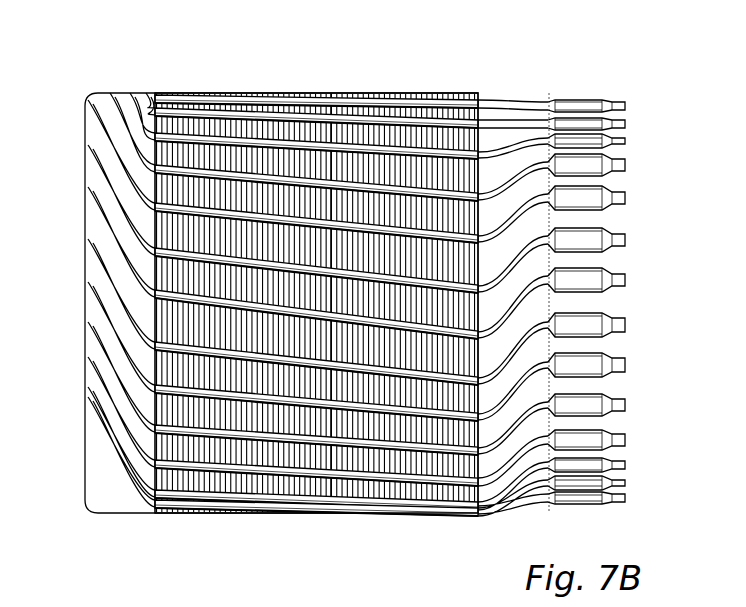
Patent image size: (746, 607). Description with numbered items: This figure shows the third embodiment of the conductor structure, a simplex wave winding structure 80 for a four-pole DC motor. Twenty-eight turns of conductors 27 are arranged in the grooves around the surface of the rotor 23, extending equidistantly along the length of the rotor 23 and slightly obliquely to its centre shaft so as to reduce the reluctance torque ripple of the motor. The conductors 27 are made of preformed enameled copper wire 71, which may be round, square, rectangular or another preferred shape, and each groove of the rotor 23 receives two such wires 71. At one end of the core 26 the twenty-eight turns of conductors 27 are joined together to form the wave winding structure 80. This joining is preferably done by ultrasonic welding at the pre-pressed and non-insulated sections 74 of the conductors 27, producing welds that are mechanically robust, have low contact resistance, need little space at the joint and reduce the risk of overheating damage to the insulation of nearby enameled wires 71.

The rotor 23 is at (212, 86).
The core 26 is at (273, 108).
The conductors 27 is at (304, 181).
The preformed enameled copper wire 71 is at (126, 147).
The pre-pressed and non-insulated sections 74 is at (594, 160).
The simplex wave winding structure 80 is at (580, 88).